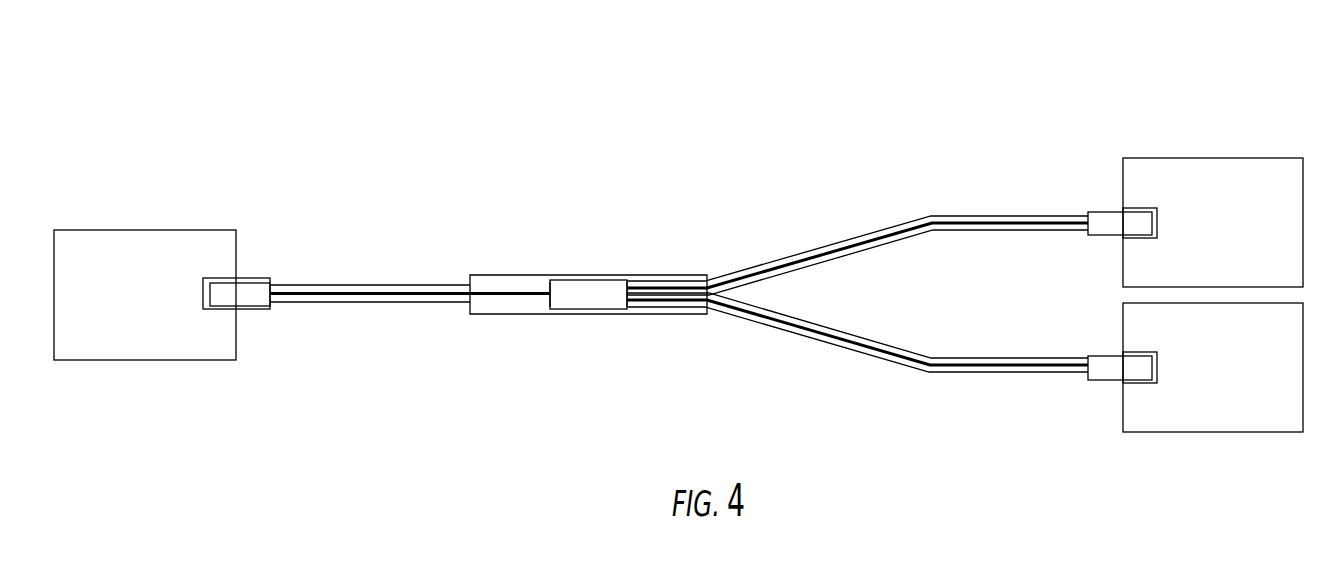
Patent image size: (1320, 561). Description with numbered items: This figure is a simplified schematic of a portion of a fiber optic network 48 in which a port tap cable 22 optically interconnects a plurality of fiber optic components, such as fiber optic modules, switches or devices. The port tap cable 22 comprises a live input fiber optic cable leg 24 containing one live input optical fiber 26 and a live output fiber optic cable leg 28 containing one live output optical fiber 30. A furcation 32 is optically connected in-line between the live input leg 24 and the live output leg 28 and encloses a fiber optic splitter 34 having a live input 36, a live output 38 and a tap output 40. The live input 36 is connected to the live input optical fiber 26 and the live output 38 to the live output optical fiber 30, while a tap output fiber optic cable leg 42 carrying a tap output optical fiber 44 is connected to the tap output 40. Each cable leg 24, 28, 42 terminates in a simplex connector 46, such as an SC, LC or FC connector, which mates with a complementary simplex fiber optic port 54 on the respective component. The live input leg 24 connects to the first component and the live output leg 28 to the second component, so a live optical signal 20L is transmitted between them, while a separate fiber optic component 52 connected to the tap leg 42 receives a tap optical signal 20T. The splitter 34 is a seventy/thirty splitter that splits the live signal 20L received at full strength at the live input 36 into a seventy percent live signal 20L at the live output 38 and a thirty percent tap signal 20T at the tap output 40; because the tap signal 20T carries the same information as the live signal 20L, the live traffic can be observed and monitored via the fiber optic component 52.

The live optical signal 20L is at (366, 310).
The tap optical signal 20T is at (927, 350).
The port tap cable 22 is at (600, 255).
The live input fiber optic cable leg 24 is at (342, 286).
The live input optical fiber 26 is at (400, 292).
The live output fiber optic cable leg 28 is at (840, 243).
The live output optical fiber 30 is at (945, 215).
The furcation 32 is at (676, 275).
The fiber optic splitter 34 is at (580, 279).
The live input 36 is at (548, 305).
The live output 38 is at (629, 281).
The tap output 40 is at (625, 308).
The tap output fiber optic cable leg 42 is at (829, 347).
The tap output optical fiber 44 is at (997, 357).
The simplex connector 46 is at (268, 284).
The network 48 is at (718, 58).
The fiber optic component 52 is at (1230, 371).
The simplex fiber optic port 54 is at (220, 284).